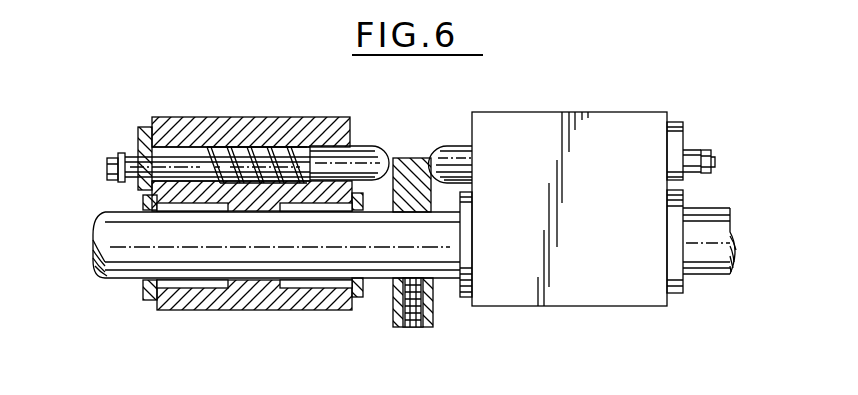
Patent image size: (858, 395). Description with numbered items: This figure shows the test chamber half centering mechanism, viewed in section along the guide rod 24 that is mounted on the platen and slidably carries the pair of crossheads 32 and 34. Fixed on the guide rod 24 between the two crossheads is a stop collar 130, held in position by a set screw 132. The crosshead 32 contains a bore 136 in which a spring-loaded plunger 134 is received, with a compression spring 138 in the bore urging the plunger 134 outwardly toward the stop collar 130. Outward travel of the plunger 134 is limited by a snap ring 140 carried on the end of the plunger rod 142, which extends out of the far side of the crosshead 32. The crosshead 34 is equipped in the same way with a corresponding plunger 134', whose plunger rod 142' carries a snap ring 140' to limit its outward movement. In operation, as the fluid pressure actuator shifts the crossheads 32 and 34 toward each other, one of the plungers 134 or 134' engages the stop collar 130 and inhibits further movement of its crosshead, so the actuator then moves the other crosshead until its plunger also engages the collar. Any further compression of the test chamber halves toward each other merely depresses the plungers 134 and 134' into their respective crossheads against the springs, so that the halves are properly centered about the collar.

The crosshead 32 is at (192, 117).
The bore 136 is at (228, 150).
The compression spring 138 is at (282, 149).
The spring-loaded plunger 134 is at (352, 131).
The stop collar 130 is at (418, 157).
The set screw 132 is at (414, 327).
The plunger 134' is at (474, 123).
The crosshead 34 is at (548, 122).
The snap ring 140 is at (89, 182).
The plunger rod 142 is at (195, 141).
The snap ring 140' is at (744, 143).
The plunger rod 142' is at (740, 163).
The guide rod 24 is at (737, 250).